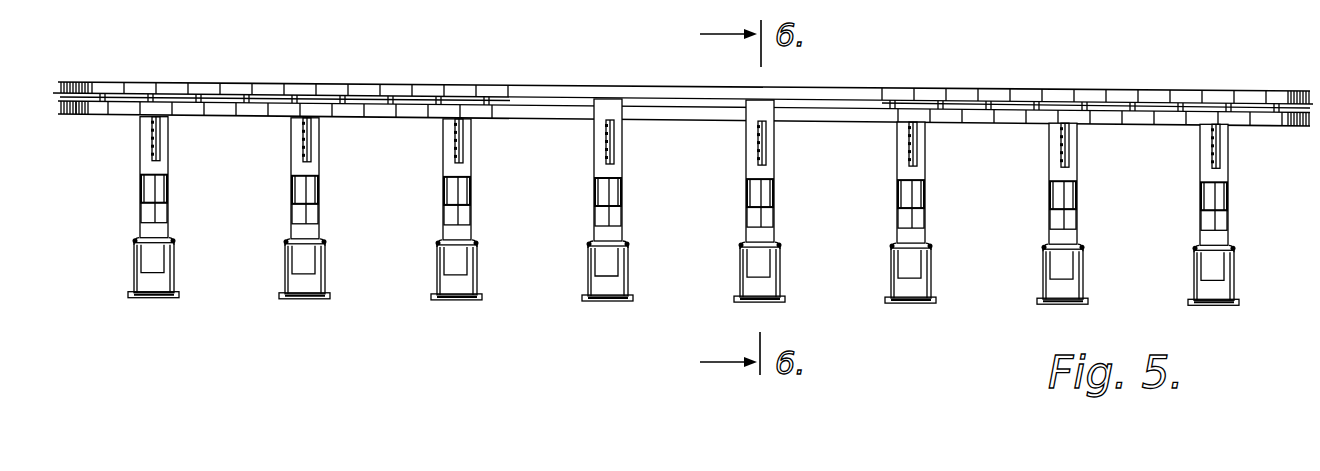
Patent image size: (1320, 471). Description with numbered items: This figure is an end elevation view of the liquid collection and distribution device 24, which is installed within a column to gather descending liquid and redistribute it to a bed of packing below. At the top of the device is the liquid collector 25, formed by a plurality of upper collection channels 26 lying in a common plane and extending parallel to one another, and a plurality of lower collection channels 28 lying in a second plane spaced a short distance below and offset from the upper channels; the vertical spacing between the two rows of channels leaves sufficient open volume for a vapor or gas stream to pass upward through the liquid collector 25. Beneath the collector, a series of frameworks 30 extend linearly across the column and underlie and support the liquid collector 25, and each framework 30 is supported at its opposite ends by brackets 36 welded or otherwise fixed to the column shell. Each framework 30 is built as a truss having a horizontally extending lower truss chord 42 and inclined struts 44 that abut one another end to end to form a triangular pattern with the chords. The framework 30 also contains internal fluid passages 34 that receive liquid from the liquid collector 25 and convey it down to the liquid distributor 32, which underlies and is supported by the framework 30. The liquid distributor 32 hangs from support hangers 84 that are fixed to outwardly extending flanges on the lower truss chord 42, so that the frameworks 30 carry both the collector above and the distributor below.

The liquid collection and distribution device 24 is at (683, 98).
The liquid collector 25 is at (978, 88).
The upper collection channels 26 is at (1133, 93).
The lower collection channels 28 is at (1145, 118).
The framework 30 is at (930, 171).
The liquid distributor 32 is at (1088, 278).
The internal fluid passages 34 is at (1220, 200).
The brackets 36 is at (1060, 142).
The lower truss chord 42 is at (918, 242).
The inclined struts 44 is at (926, 198).
The support hangers 84 is at (773, 300).